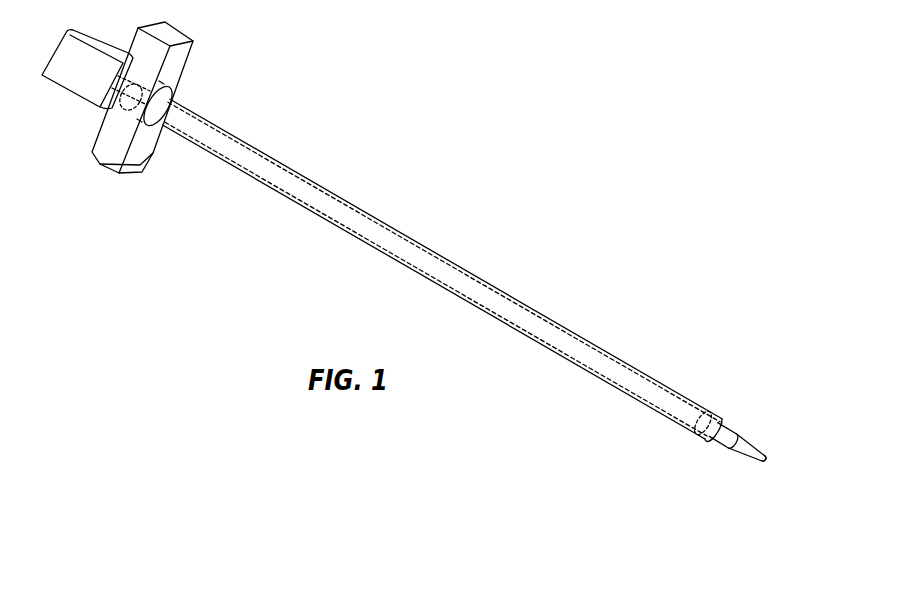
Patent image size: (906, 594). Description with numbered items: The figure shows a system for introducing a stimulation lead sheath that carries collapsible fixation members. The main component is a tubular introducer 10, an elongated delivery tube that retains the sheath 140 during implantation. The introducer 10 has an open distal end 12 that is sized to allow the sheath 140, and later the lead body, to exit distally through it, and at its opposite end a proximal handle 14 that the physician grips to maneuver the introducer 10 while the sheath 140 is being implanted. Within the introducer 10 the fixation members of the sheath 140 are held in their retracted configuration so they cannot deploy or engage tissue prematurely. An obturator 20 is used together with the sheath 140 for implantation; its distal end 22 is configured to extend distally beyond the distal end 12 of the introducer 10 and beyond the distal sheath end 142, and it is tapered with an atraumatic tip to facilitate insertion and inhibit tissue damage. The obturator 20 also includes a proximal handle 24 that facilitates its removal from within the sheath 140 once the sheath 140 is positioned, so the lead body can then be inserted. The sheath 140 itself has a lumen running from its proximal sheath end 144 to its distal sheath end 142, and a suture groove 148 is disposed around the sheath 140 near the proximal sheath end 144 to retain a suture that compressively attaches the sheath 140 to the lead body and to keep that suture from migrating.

The tubular introducer 10 is at (386, 218).
The open distal end 12 is at (724, 417).
The proximal handle 14 is at (176, 27).
The obturator 20 is at (757, 446).
The distal end 22 is at (770, 460).
The proximal handle 24 is at (70, 90).
The sheath 140 is at (643, 383).
The distal sheath end 142 is at (737, 455).
The proximal sheath end 144 is at (113, 112).
The suture groove 148 is at (185, 91).